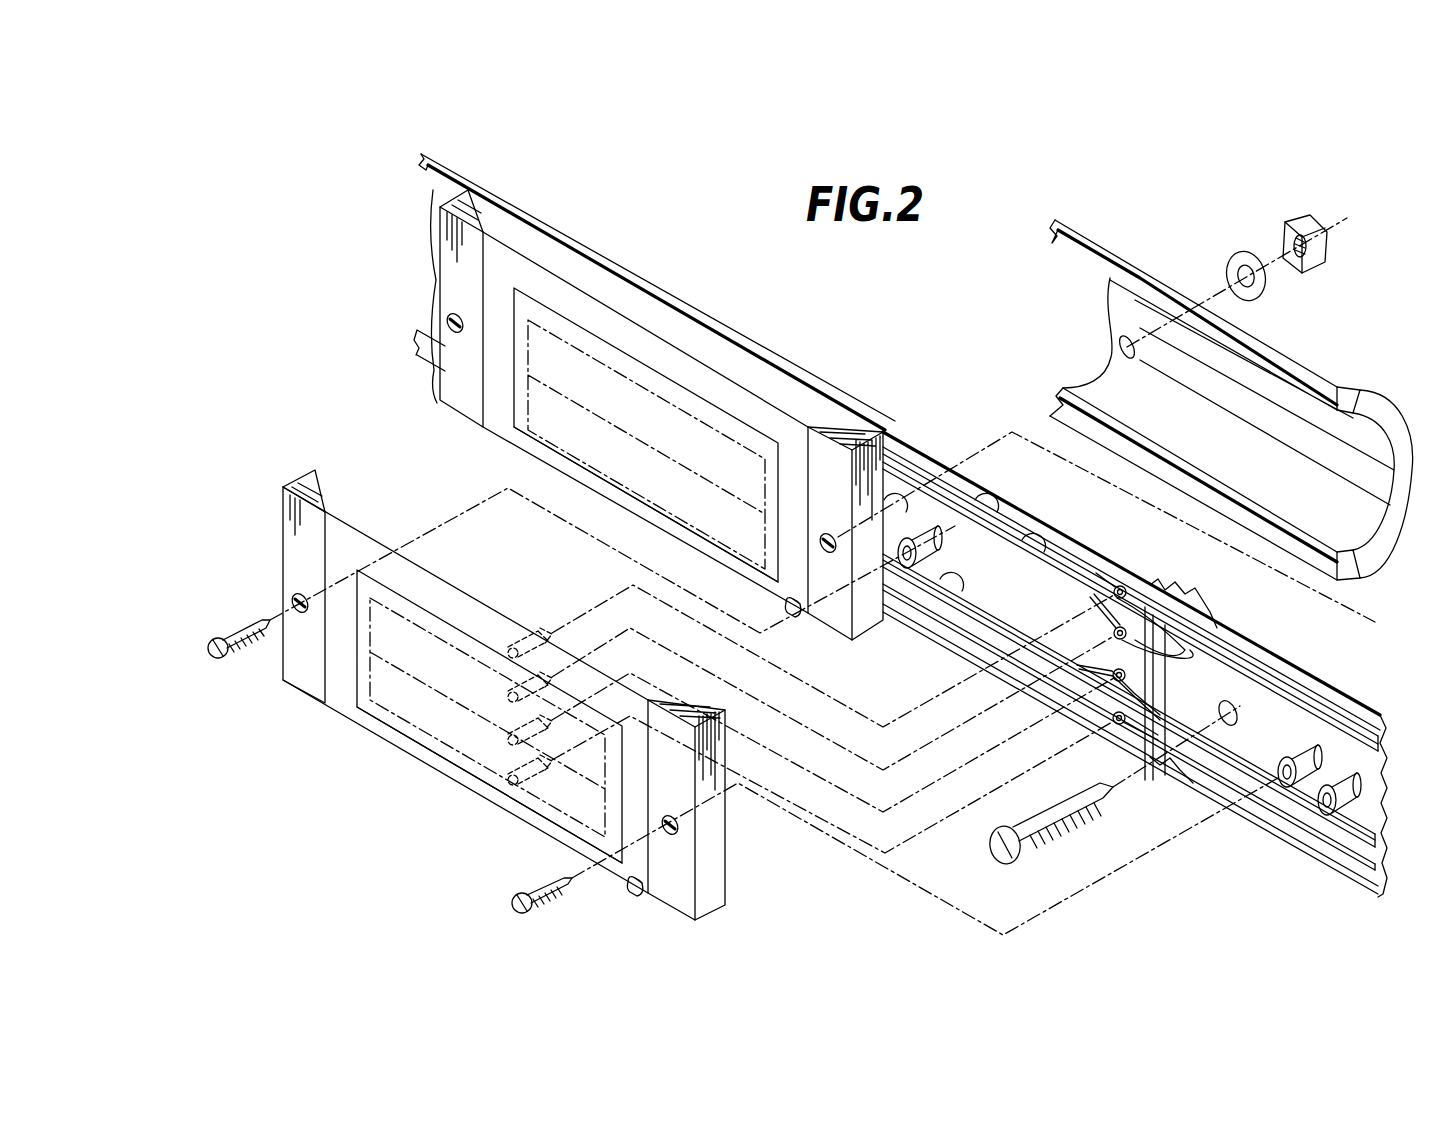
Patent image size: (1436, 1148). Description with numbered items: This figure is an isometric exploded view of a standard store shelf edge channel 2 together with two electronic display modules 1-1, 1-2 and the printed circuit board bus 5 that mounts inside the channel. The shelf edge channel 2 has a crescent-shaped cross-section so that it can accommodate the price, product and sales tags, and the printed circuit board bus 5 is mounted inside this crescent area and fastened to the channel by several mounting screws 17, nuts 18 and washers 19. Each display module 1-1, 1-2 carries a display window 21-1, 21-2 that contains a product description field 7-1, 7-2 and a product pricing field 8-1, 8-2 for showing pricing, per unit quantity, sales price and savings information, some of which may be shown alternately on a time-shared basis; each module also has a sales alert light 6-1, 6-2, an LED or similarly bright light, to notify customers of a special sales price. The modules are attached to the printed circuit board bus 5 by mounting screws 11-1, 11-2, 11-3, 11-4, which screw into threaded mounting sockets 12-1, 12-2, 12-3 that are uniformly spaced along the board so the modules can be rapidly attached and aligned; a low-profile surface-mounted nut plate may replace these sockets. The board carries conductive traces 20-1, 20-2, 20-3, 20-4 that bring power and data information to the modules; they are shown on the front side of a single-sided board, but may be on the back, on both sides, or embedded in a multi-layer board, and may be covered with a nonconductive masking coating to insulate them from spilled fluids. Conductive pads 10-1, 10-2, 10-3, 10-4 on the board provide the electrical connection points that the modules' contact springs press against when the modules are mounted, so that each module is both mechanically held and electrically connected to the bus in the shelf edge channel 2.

The display module 1-1 is at (330, 714).
The display module 1-2 is at (493, 416).
The shelf edge channel 2 is at (1305, 355).
The printed circuit board bus 5 is at (1370, 855).
The sales alert light 6-1 is at (636, 897).
The sales alert light 6-2 is at (795, 618).
The product description field 7-1 is at (440, 648).
The product description field 7-2 is at (567, 345).
The product pricing field 8-1 is at (440, 735).
The product pricing field 8-2 is at (563, 437).
The conductive pad 10-1 is at (1114, 724).
The conductive pad 10-2 is at (1113, 683).
The conductive pad 10-3 is at (1195, 653).
The conductive pad 10-4 is at (1112, 588).
The mounting screw 11-1 is at (218, 638).
The mounting screw 11-2 is at (520, 893).
The mounting screw 11-3 is at (832, 550).
The mounting screw 11-4 is at (452, 318).
The threaded mounting socket 12-1 is at (920, 548).
The threaded mounting socket 12-2 is at (1300, 750).
The threaded mounting socket 12-3 is at (1340, 782).
The mounting screw 17 is at (1017, 855).
The nut 18 is at (1302, 226).
The washer 19 is at (1241, 262).
The conductive trace 20-1 is at (985, 497).
The conductive trace 20-2 is at (1028, 540).
The conductive trace 20-3 is at (955, 583).
The conductive trace 20-4 is at (1320, 838).
The display window 21-1 is at (420, 612).
The display window 21-2 is at (642, 362).